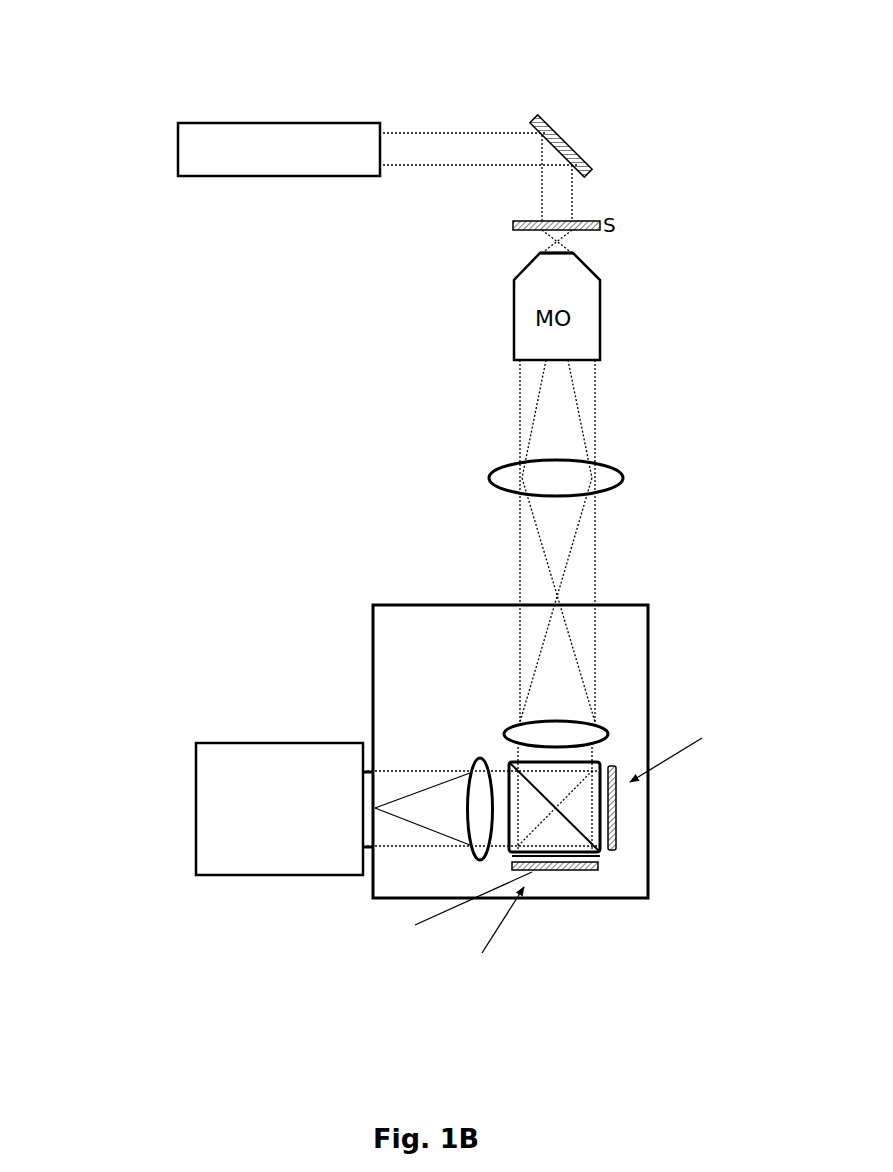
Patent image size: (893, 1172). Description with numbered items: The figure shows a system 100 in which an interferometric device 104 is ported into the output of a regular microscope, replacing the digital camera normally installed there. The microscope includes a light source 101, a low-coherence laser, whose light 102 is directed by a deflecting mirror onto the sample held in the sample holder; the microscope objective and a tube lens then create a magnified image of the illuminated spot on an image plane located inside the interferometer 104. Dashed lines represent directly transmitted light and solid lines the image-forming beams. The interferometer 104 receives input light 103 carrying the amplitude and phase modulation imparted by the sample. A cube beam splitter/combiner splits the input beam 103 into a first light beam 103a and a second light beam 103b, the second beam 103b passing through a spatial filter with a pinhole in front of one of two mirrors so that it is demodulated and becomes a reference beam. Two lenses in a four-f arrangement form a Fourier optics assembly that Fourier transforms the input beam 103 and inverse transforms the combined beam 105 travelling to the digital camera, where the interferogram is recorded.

The system 100 is at (247, 68).
The light source 101 is at (176, 150).
The light 102 is at (481, 130).
The light 103 is at (610, 413).
The first light beam 103a is at (587, 816).
The second light beam 103b is at (565, 835).
The interferometric device 104 is at (370, 631).
The combined beam 105 is at (500, 842).